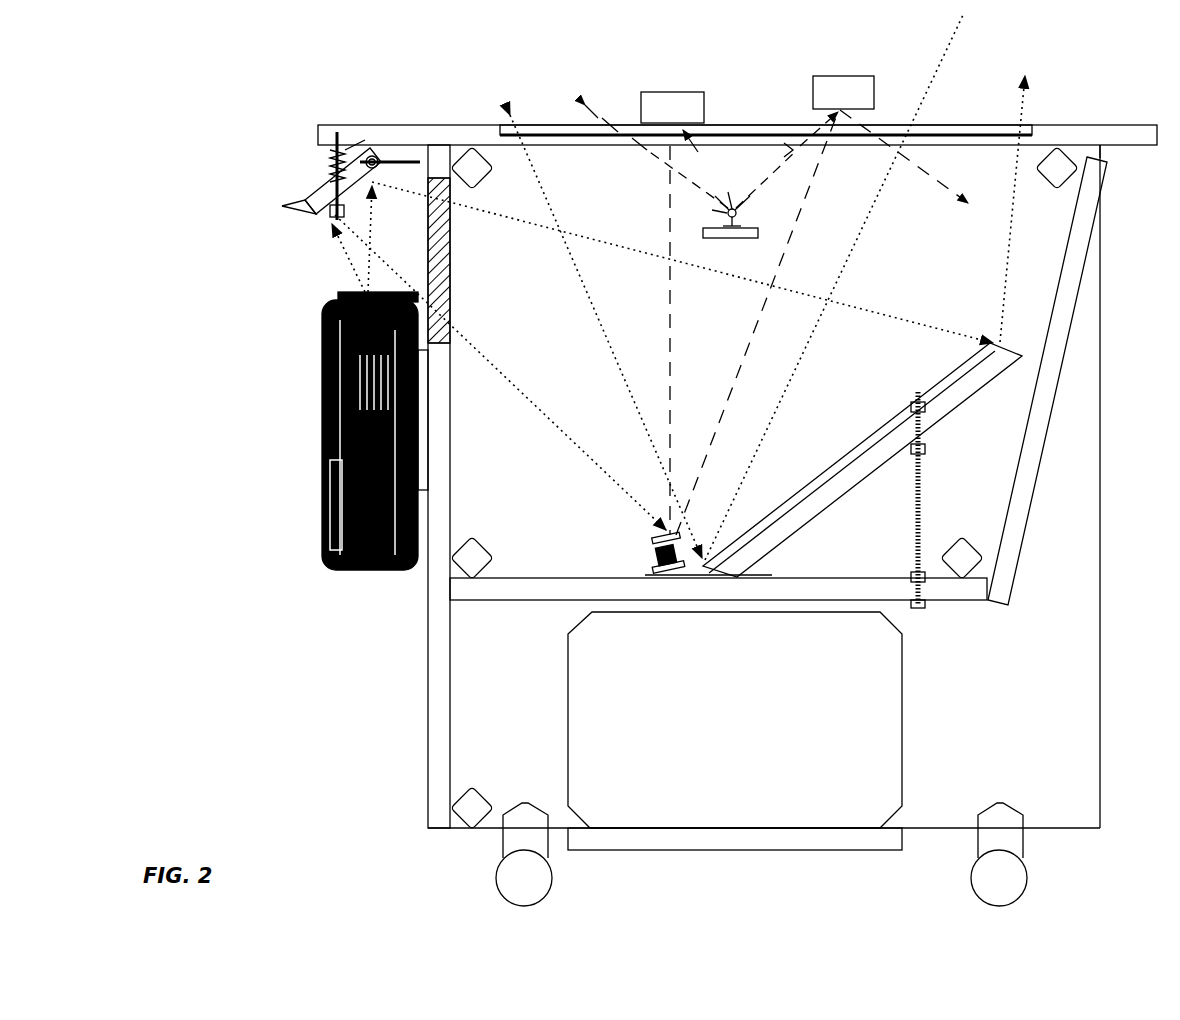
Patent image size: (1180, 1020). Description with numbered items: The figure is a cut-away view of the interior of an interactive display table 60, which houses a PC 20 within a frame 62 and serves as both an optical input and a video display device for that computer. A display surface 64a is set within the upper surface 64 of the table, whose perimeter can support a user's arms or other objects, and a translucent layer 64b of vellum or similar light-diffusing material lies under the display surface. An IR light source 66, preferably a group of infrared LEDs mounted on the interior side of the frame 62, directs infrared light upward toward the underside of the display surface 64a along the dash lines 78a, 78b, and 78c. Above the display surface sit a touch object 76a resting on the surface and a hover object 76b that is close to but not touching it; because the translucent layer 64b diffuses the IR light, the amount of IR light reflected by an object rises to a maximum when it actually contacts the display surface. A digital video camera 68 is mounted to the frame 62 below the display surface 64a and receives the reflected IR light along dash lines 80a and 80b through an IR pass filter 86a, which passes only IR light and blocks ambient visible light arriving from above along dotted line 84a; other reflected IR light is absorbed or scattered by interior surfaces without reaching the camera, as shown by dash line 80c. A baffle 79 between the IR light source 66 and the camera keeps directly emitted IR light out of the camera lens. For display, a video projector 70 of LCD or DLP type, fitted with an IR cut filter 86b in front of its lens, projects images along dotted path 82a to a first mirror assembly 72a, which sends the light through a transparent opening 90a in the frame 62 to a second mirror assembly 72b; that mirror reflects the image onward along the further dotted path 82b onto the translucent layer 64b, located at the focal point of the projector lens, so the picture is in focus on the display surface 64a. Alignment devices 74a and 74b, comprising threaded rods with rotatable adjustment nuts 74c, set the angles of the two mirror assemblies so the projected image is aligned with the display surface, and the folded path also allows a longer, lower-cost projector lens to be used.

The PC 20 is at (902, 720).
The interactive display table 60 is at (318, 640).
The frame 62 is at (428, 712).
The upper surface 64 is at (456, 125).
The display surface 64a is at (562, 125).
The translucent layer 64b is at (940, 130).
The IR light source 66 is at (725, 222).
The digital video camera 68 is at (655, 548).
The video projector 70 is at (318, 405).
The first mirror assembly 72a is at (318, 212).
The second mirror assembly 72b is at (828, 470).
The alignment device 74a is at (372, 158).
The alignment device 74b is at (922, 478).
The rotatable adjustment nut 74c is at (330, 208).
The touch object 76a is at (672, 92).
The hover object 76b is at (835, 76).
The dash line 78a is at (645, 150).
The dash line 78b is at (708, 178).
The dash line 78c is at (797, 152).
The baffle 79 is at (727, 238).
The dash line 80a is at (668, 318).
The dash line 80b is at (752, 348).
The dash line 80c is at (935, 170).
The dotted path 82a is at (383, 263).
The optical path 82b is at (578, 265).
The dotted line 84a is at (960, 20).
The IR pass filter 86a is at (655, 532).
The IR cut filter 86b is at (340, 300).
The transparent opening 90a is at (452, 300).